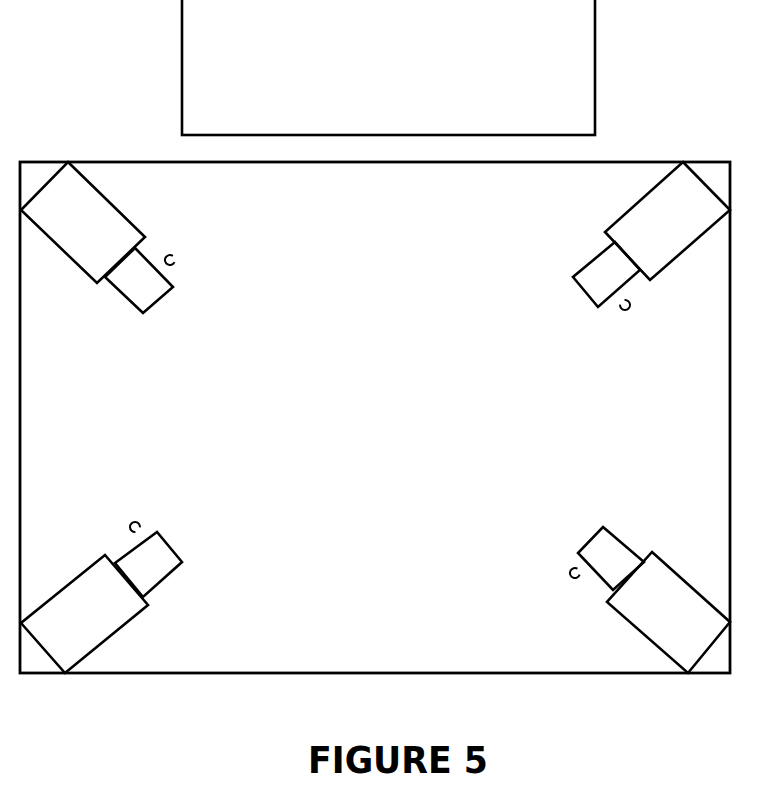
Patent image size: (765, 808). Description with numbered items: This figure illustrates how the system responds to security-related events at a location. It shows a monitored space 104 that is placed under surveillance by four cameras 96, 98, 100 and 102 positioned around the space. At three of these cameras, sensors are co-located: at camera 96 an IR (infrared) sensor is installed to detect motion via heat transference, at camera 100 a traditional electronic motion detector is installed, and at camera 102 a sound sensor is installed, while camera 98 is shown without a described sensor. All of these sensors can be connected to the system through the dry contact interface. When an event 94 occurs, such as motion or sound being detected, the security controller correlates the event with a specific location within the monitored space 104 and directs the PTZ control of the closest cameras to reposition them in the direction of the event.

The event 94 is at (402, 123).
The camera 96 is at (98, 239).
The camera 98 is at (681, 239).
The camera 100 is at (103, 635).
The camera 102 is at (694, 637).
The monitored space 104 is at (413, 422).